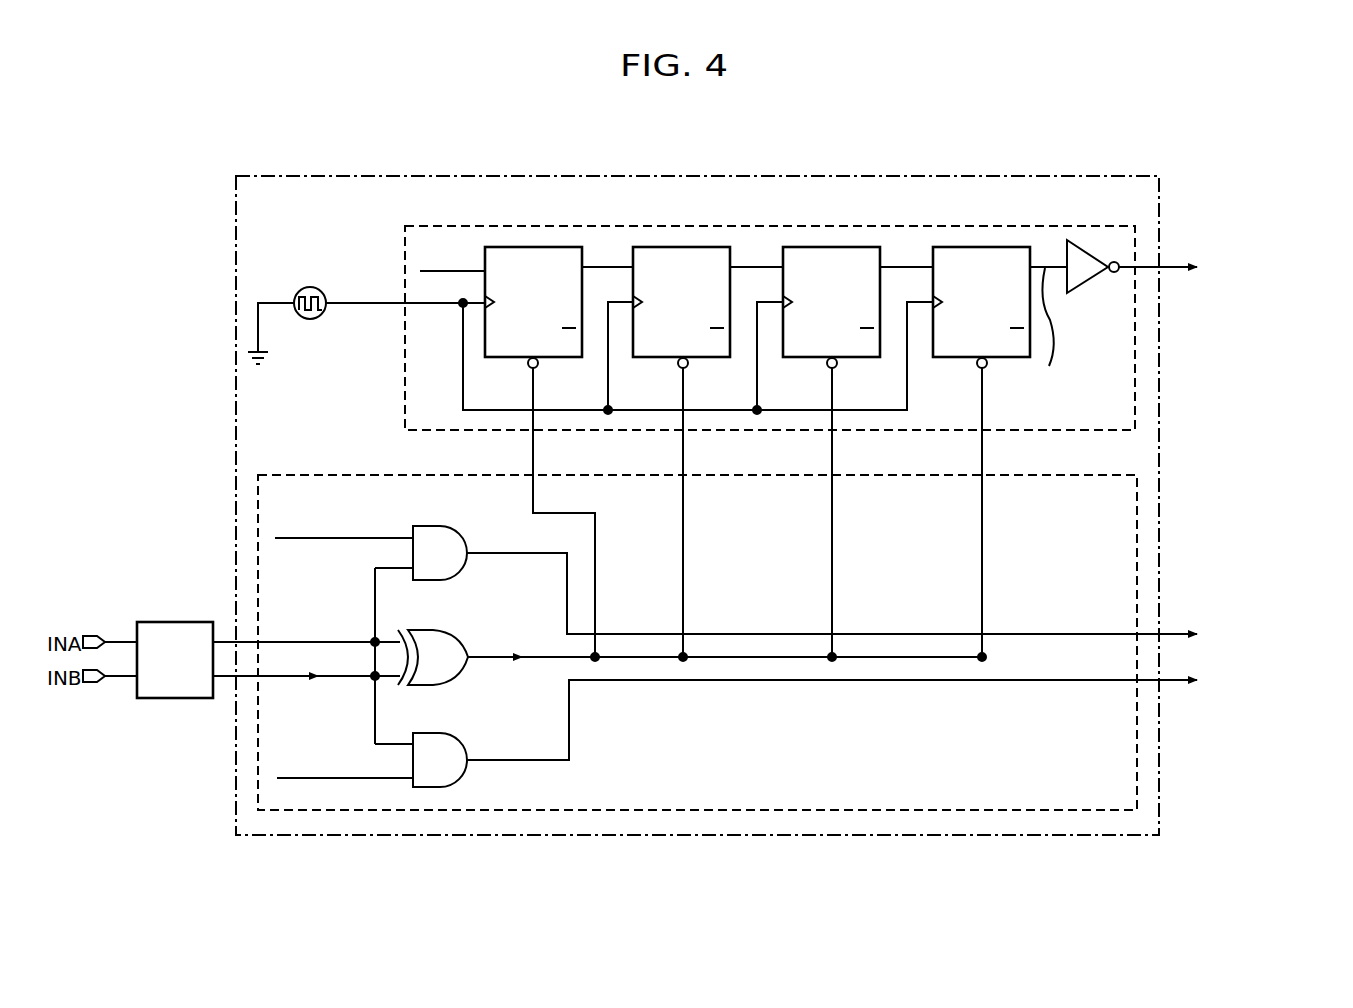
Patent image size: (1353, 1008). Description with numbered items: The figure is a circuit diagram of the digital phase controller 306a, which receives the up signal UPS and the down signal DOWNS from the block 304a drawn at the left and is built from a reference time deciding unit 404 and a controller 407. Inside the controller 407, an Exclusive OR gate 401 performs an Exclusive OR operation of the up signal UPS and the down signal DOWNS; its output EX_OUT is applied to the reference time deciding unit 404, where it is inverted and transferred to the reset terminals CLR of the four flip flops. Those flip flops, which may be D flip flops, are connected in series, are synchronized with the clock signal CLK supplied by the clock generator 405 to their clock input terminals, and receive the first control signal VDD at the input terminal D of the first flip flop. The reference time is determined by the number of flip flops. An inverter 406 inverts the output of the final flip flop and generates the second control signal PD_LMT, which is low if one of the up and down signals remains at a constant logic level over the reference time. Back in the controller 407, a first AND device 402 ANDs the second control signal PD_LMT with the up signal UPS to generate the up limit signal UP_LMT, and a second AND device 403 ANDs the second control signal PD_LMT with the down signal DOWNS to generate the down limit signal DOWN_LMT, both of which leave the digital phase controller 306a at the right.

The digital phase controller 306a is at (1043, 176).
The reference time deciding unit 404 is at (1043, 226).
The clock generator 405 is at (310, 319).
The inverter 406 is at (1083, 284).
The controller 407 is at (1048, 475).
The Exclusive OR gate 401 is at (445, 630).
The first AND device 402 is at (445, 526).
The second AND device 403 is at (445, 733).
The phase detector 304a is at (174, 622).